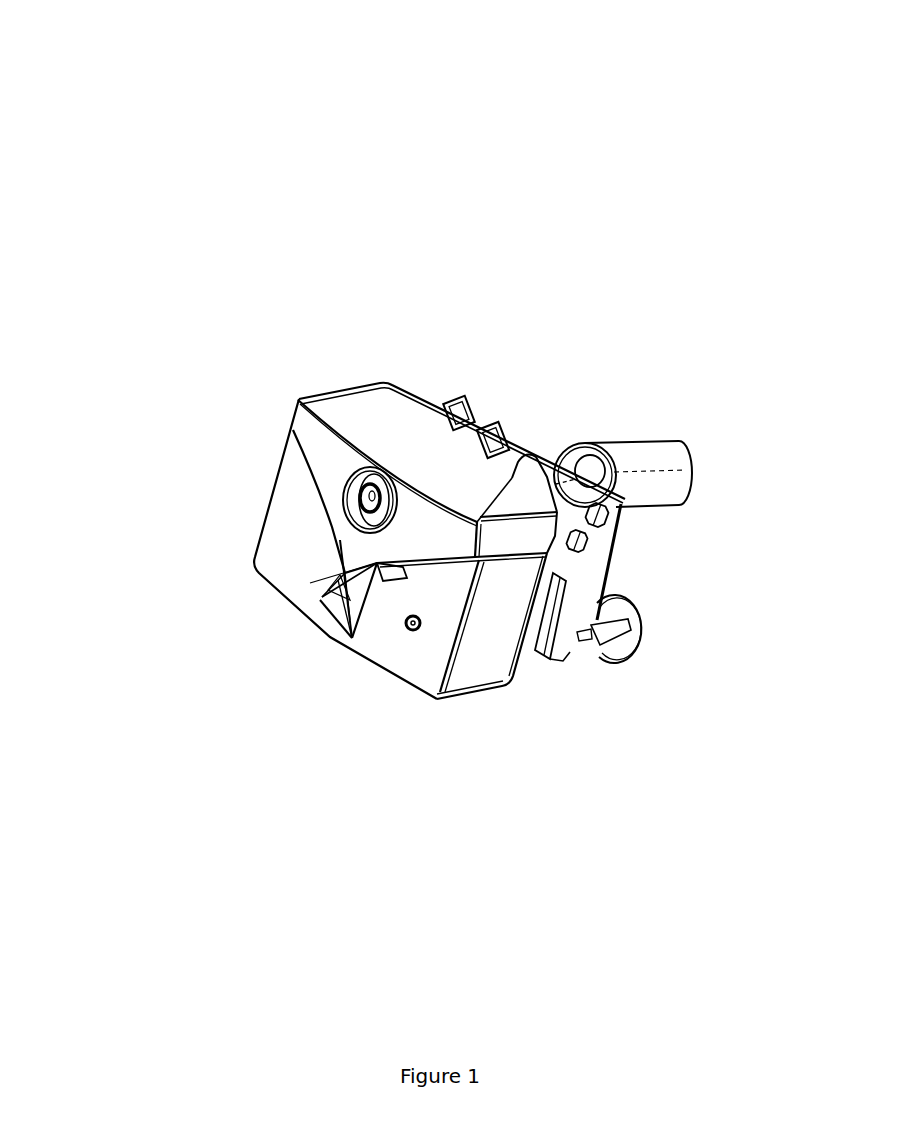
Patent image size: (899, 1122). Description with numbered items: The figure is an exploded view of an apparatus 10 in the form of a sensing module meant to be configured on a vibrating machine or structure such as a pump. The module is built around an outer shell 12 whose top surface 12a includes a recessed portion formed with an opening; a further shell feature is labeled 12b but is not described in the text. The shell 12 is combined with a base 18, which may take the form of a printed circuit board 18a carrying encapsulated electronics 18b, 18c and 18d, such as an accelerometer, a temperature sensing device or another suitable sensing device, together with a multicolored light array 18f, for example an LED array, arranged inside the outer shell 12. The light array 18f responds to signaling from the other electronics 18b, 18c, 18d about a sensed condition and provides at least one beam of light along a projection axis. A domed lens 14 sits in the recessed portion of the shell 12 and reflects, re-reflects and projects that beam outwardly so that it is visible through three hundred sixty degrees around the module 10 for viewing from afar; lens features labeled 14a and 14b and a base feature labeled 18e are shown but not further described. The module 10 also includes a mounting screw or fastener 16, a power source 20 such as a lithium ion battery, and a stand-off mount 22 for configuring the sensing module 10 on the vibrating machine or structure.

The sensing module 10 is at (712, 160).
The outer shell 12 is at (347, 387).
The top surface 12a is at (300, 517).
The outer shell front face 12b is at (345, 487).
The domed lens 14 is at (216, 642).
The domed lens facet 14a is at (345, 608).
The domed lens facet 14b is at (378, 595).
The mounting screw or fastener 16 is at (367, 497).
The base 18 is at (613, 565).
The printed circuit board 18a is at (559, 472).
The encapsulated electronics element 18b is at (462, 405).
The encapsulated electronics element 18c is at (588, 542).
The encapsulated electronics element 18d is at (542, 627).
The base ledge 18e is at (527, 448).
The multicolored light array 18f is at (320, 598).
The power source 20 is at (603, 663).
The stand-off mount 22 is at (656, 445).